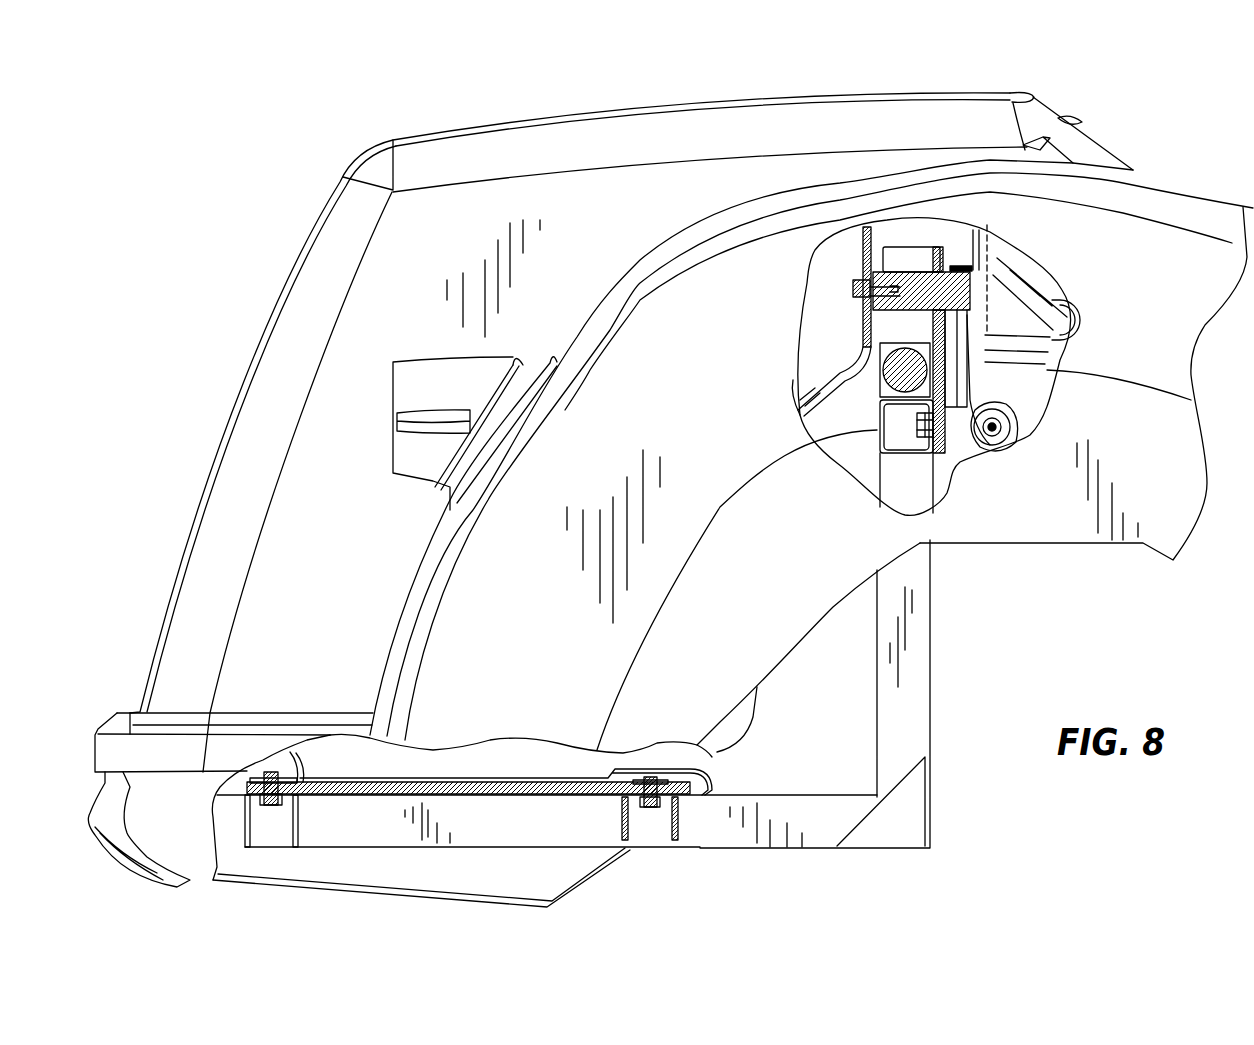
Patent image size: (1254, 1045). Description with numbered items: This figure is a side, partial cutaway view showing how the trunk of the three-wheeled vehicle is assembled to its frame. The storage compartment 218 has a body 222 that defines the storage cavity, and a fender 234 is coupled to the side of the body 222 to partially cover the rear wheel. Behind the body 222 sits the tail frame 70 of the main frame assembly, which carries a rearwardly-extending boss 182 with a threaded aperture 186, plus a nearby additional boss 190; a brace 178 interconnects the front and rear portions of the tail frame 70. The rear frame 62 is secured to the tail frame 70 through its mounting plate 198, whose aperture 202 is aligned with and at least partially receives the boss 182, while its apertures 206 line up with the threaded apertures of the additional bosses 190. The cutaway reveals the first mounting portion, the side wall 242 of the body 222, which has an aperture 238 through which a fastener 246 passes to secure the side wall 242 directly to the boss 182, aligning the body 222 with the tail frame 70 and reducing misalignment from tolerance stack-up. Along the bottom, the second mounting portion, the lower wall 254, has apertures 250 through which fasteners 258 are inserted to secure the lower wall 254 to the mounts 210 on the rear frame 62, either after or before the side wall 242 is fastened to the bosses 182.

The storage compartment 218 is at (357, 100).
The body 222 is at (540, 145).
The fender 234 is at (1192, 203).
The tail frame 70 is at (1053, 298).
The threaded aperture 186 is at (872, 272).
The boss 182 is at (918, 285).
The side wall 242 is at (862, 266).
The aperture 238 is at (852, 296).
The fastener 246 is at (858, 316).
The mounting plate 198 is at (878, 335).
The aperture 202 is at (987, 270).
The boss 190 is at (953, 500).
The aperture 206 is at (877, 430).
The brace 178 is at (1010, 447).
The rear frame 62 is at (746, 862).
The mount 210 is at (303, 820).
The lower wall 254 is at (391, 798).
The fastener 258 is at (270, 772).
The aperture 250 is at (276, 808).